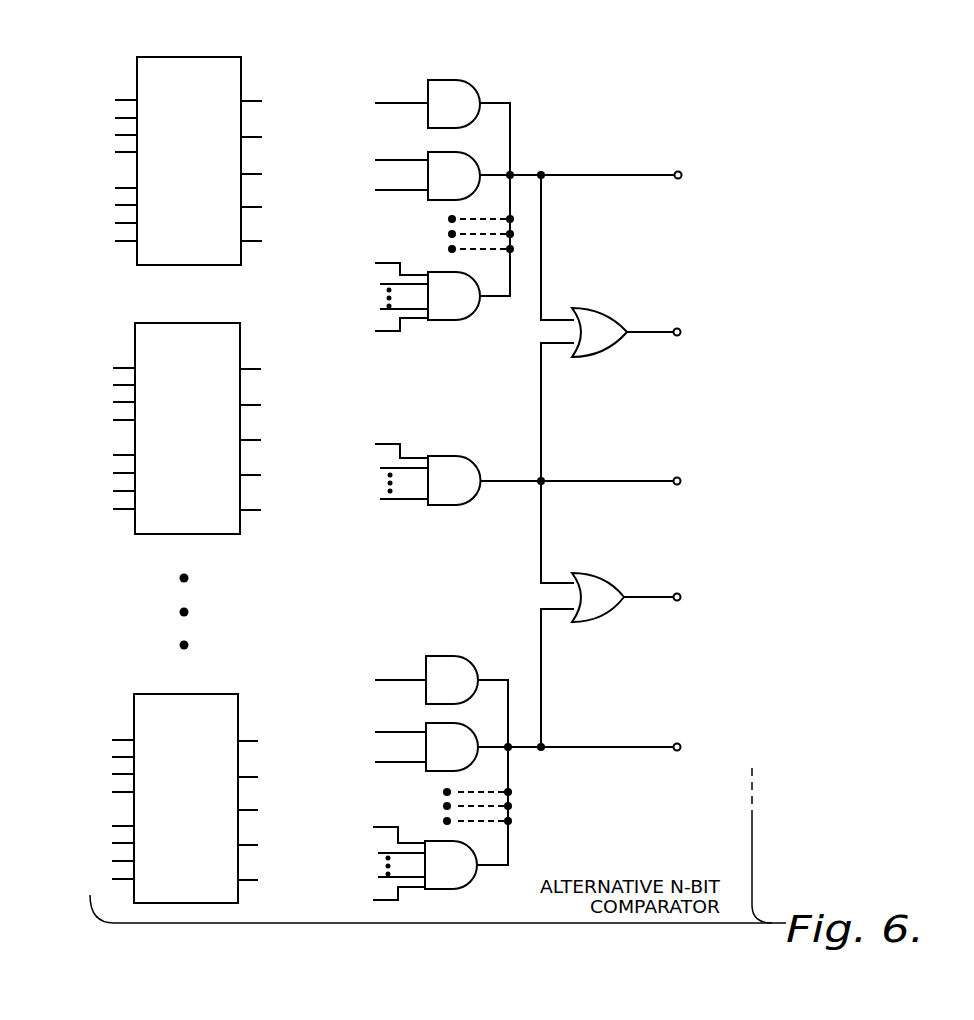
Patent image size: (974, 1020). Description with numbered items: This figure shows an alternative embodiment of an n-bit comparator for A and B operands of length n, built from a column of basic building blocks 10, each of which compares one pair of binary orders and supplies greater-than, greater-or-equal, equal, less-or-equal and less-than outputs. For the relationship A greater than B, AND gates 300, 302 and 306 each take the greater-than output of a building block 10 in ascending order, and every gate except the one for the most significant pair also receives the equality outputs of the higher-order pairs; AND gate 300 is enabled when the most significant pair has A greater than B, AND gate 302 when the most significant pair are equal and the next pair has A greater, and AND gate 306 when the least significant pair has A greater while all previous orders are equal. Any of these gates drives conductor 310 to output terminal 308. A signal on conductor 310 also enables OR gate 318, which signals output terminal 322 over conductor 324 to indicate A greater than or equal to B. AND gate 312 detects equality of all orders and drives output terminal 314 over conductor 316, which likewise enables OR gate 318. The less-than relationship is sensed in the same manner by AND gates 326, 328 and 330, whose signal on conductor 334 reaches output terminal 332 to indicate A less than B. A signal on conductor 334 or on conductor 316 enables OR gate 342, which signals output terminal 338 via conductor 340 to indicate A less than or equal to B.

The basic building block 10 is at (208, 480).
The AND gate 300 is at (438, 113).
The AND gate 302 is at (438, 185).
The AND gate 306 is at (438, 305).
The AND gate 312 is at (438, 490).
The OR gate 318 is at (582, 341).
The AND gate 326 is at (436, 689).
The AND gate 328 is at (436, 756).
The AND gate 330 is at (435, 874).
The OR gate 342 is at (580, 606).
The output terminal 308 is at (677, 171).
The conductor 310 is at (578, 174).
The output terminal 314 is at (676, 477).
The conductor 316 is at (601, 480).
The output terminal 322 is at (678, 328).
The conductor 324 is at (648, 330).
The output terminal 332 is at (674, 745).
The conductor 334 is at (601, 746).
The output terminal 338 is at (679, 593).
The conductor 340 is at (637, 596).